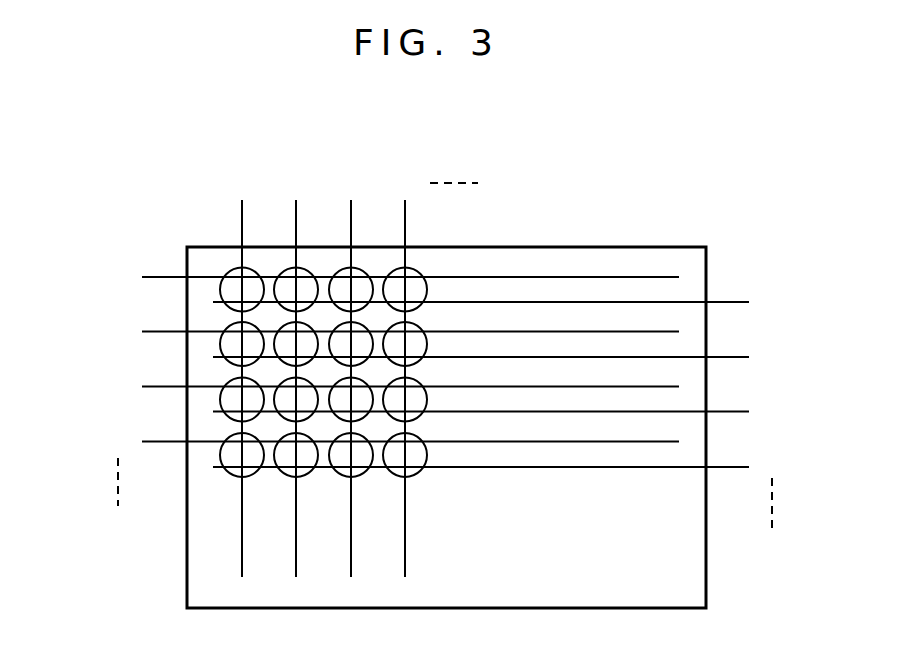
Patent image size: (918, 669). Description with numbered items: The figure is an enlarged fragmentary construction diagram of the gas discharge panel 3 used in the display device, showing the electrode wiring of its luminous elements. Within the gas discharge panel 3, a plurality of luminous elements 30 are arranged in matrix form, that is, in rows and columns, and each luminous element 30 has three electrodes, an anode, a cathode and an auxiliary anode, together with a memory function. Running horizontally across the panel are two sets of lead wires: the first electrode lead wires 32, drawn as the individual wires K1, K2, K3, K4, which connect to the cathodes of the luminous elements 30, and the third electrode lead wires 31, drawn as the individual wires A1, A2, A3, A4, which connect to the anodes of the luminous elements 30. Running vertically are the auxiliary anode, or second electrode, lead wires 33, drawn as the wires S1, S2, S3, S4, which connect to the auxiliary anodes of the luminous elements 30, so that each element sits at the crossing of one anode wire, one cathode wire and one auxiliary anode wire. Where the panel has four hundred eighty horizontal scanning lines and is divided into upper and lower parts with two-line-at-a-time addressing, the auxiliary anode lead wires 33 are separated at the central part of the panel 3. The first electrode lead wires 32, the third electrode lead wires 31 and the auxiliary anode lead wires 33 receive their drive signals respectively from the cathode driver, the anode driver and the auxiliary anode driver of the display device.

The gas discharge panel 3 is at (517, 540).
The luminous element 30 is at (418, 475).
The third electrode lead wires 31 is at (358, 384).
The first electrode lead wires 32 is at (533, 408).
The auxiliary anode (second electrode) lead wires 33 is at (350, 341).
The auxiliary anode lead wire S1 is at (238, 375).
The auxiliary anode lead wire S2 is at (293, 375).
The auxiliary anode lead wire S3 is at (347, 375).
The auxiliary anode lead wire S4 is at (402, 375).
The third electrode lead wire A1 is at (390, 277).
The third electrode lead wire A2 is at (390, 331).
The third electrode lead wire A3 is at (390, 388).
The third electrode lead wire A4 is at (390, 442).
The first electrode lead wire K1 is at (499, 299).
The first electrode lead wire K2 is at (499, 355).
The first electrode lead wire K3 is at (499, 410).
The first electrode lead wire K4 is at (499, 465).